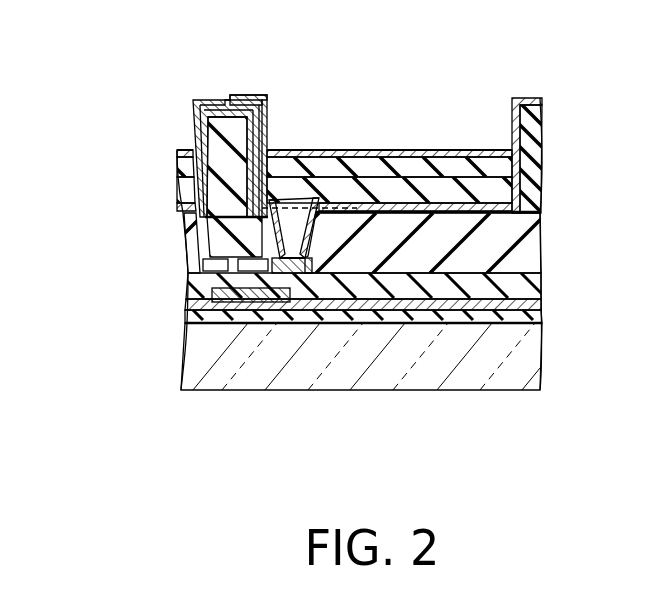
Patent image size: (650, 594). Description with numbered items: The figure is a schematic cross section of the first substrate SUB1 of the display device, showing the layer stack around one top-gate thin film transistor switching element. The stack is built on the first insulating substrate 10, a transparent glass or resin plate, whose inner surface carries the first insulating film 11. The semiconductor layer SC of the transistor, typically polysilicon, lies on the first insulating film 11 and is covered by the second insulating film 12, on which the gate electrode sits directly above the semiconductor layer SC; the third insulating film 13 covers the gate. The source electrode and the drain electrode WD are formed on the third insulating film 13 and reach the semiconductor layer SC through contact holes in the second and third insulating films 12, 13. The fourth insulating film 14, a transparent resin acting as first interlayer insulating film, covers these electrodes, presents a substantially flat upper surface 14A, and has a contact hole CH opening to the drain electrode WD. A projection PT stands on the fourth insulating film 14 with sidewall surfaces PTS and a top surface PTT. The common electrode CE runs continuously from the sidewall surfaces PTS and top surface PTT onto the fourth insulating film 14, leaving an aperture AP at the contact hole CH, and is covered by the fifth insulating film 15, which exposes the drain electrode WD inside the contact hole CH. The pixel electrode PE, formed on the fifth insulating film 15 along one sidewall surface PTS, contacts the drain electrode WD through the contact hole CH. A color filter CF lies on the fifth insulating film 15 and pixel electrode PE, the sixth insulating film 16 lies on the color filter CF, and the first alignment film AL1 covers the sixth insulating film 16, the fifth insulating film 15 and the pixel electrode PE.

The first substrate SUB1 is at (165, 411).
The first insulating substrate 10 is at (186, 367).
The first insulating film 11 is at (189, 315).
The second insulating film 12 is at (190, 303).
The third insulating film 13 is at (196, 284).
The fourth insulating film 14 is at (213, 258).
The upper surface 14A is at (419, 199).
The fifth insulating film 15 is at (463, 183).
The sixth insulating film 16 is at (488, 166).
The semiconductor layer SC is at (230, 303).
The drain electrode WD is at (288, 242).
The contact hole CH is at (312, 235).
The common electrode CE is at (371, 149).
The color filter CF is at (487, 195).
The first alignment film AL1 is at (520, 99).
The projection PT is at (218, 135).
The sidewall surface PTS is at (258, 114).
The top surface PTT is at (206, 99).
The pixel electrode PE is at (240, 100).
The aperture AP is at (300, 195).